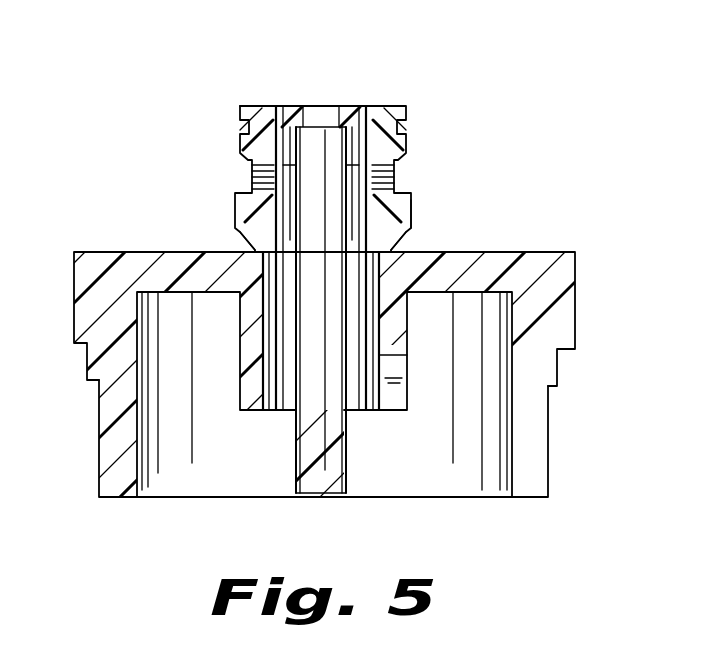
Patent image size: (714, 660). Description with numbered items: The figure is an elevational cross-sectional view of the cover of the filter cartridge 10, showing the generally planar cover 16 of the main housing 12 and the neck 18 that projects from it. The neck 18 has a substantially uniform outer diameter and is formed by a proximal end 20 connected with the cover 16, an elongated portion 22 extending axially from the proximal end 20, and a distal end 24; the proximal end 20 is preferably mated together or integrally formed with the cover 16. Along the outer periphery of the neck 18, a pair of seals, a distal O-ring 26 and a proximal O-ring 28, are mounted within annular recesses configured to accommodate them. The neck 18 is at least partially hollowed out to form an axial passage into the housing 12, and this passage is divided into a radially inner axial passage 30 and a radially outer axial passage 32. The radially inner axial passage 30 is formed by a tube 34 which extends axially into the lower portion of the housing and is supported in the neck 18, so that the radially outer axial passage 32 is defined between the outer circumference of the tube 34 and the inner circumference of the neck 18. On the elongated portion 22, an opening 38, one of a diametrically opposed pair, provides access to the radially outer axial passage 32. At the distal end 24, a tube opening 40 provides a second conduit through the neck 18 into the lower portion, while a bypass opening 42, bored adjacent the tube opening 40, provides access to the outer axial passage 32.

The filter cartridge 10 is at (63, 141).
The main housing 12 is at (547, 458).
The cover 16 is at (563, 252).
The neck 18 is at (412, 226).
The proximal end 20 is at (412, 243).
The elongated portion 22 is at (241, 197).
The distal end 24 is at (252, 104).
The distal O-ring 26 is at (355, 140).
The proximal O-ring 28 is at (253, 135).
The radially inner axial passage 30 is at (300, 268).
The radially outer axial passage 32 is at (365, 305).
The tube 34 is at (347, 472).
The opening 38 is at (250, 180).
The tube opening 40 is at (320, 108).
The bypass opening 42 is at (277, 143).